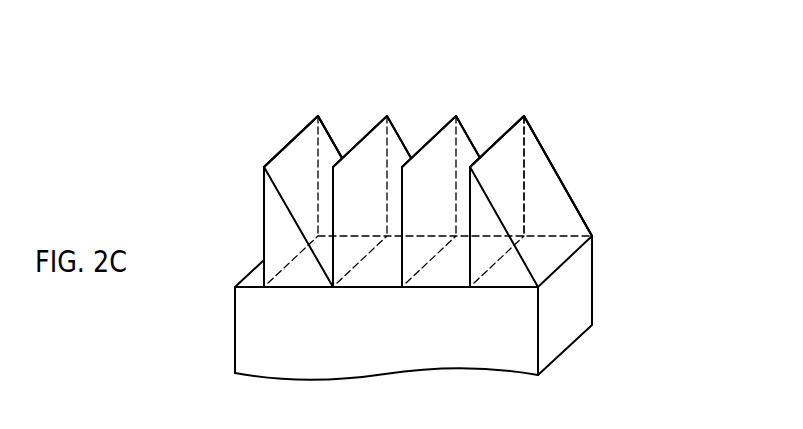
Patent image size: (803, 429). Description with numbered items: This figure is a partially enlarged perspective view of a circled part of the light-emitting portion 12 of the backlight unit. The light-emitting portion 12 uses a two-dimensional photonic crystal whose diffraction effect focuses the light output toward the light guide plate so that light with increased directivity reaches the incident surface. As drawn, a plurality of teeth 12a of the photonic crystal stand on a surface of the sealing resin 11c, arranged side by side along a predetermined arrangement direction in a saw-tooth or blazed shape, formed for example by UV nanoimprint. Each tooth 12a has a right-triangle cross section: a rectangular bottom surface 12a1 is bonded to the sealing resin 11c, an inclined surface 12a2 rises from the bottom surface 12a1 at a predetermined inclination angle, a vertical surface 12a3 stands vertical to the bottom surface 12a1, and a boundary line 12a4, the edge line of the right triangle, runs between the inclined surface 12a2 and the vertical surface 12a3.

The sealing resin 11c is at (574, 289).
The light-emitting portion 12 is at (437, 108).
The tooth 12a is at (332, 136).
The bottom surface 12a1 is at (297, 277).
The inclined surface 12a2 is at (299, 150).
The vertical surface 12a3 is at (278, 226).
The boundary line 12a4 is at (319, 114).